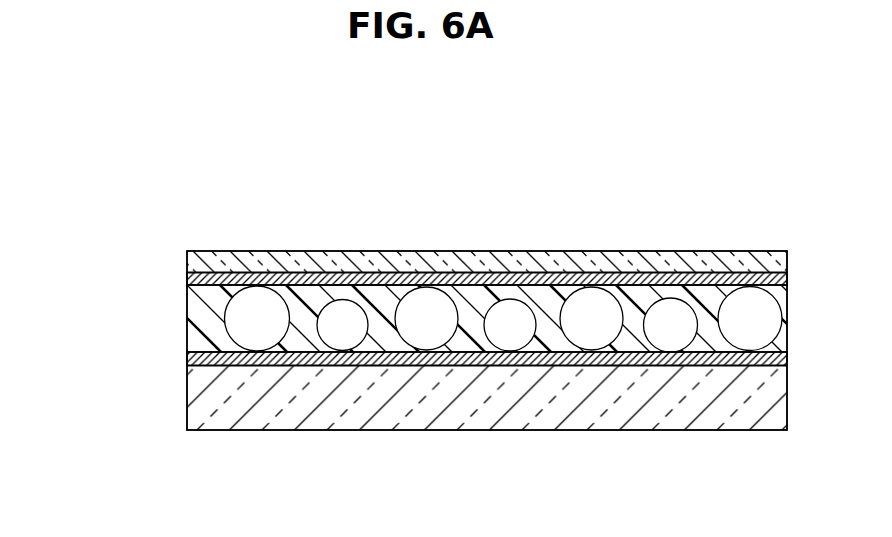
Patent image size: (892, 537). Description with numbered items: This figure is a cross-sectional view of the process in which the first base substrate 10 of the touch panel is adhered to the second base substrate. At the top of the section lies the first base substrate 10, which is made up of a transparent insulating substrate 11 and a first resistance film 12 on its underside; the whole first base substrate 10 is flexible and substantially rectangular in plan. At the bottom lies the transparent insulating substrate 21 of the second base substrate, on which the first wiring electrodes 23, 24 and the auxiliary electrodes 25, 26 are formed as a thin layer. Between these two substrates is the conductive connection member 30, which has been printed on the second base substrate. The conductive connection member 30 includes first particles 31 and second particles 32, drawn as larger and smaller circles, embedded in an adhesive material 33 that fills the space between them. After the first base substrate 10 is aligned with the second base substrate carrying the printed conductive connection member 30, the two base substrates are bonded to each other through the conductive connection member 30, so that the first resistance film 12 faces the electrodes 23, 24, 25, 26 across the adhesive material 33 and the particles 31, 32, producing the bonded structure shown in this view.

The first base substrate 10 is at (107, 228).
The transparent insulating substrate 11 is at (187, 262).
The first resistance film 12 is at (187, 278).
The transparent insulating substrate 21 is at (698, 420).
The first wiring electrode 23 is at (487, 418).
The first wiring electrode 24 is at (487, 418).
The auxiliary electrode 25 is at (418, 358).
The auxiliary electrode 26 is at (487, 418).
The conductive connection member 30 is at (485, 203).
The first particles 31 is at (423, 300).
The second particles 32 is at (347, 316).
The adhesive material 33 is at (306, 298).